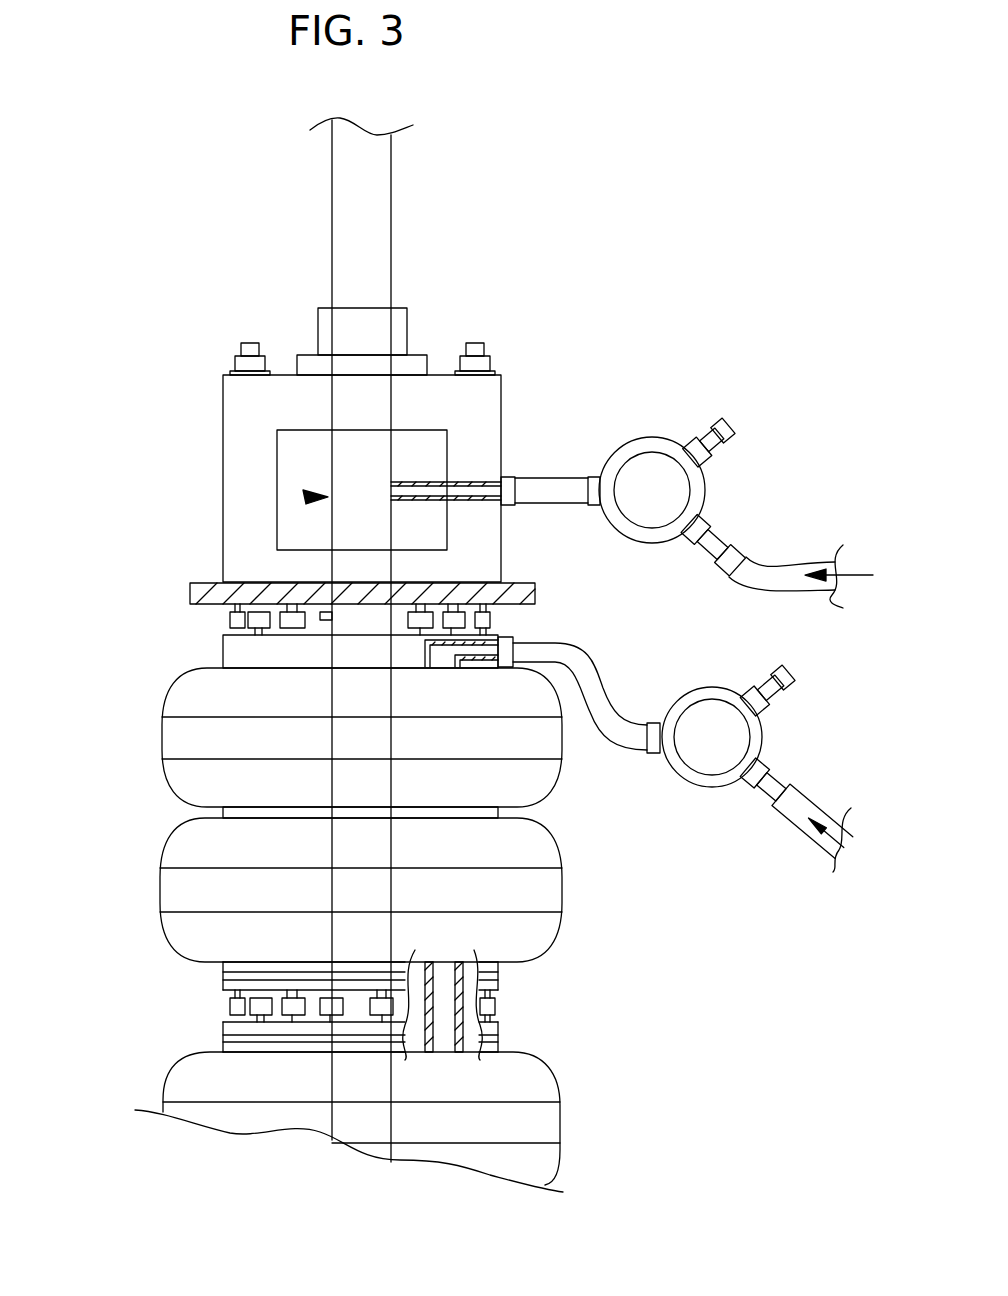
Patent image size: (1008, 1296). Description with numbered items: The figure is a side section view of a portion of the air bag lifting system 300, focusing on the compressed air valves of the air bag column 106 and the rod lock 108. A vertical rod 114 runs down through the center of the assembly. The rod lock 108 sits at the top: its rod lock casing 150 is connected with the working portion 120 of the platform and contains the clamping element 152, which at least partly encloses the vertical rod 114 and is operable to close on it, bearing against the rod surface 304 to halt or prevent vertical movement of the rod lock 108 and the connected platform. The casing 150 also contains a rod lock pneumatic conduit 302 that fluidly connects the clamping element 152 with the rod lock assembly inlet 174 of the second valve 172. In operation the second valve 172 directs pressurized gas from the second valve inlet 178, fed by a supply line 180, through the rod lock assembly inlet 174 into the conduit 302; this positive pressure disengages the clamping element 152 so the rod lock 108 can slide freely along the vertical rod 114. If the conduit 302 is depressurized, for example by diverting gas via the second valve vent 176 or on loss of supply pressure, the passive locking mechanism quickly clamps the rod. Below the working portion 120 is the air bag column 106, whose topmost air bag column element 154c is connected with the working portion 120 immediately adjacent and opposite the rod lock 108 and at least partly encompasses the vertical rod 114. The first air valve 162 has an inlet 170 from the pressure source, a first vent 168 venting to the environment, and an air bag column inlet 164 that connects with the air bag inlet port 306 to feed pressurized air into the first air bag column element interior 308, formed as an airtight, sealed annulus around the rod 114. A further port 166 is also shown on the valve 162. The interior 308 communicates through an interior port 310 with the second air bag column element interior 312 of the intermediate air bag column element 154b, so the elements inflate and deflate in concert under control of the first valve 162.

The air bag lifting system 300 is at (193, 255).
The air bag column 106 is at (103, 942).
The rod lock 108 is at (186, 360).
The vertical rod 114 is at (332, 237).
The working portion 120 is at (190, 590).
The rod lock casing 150 is at (432, 377).
The clamping element 152 is at (277, 445).
The intermediate air bag column element 154b is at (173, 853).
The topmost air bag column element 154c is at (167, 728).
The first air valve 162 is at (707, 687).
The air bag column inlet 164 is at (653, 757).
The valve outlet port 166 is at (768, 765).
The first vent 168 is at (787, 670).
The inlet 170 is at (820, 800).
The second valve 172 is at (643, 440).
The rod lock assembly inlet 174 is at (590, 507).
The second valve vent 176 is at (730, 432).
The second valve inlet 178 is at (728, 518).
The fluid hose 180 is at (758, 560).
The rod lock pneumatic conduit 302 is at (463, 480).
The rod surface 304 is at (303, 497).
The air bag inlet port 306 is at (478, 668).
The first air bag column element interior 308 is at (362, 738).
The interior port 310 is at (465, 1003).
The second air bag column element interior 312 is at (349, 1122).